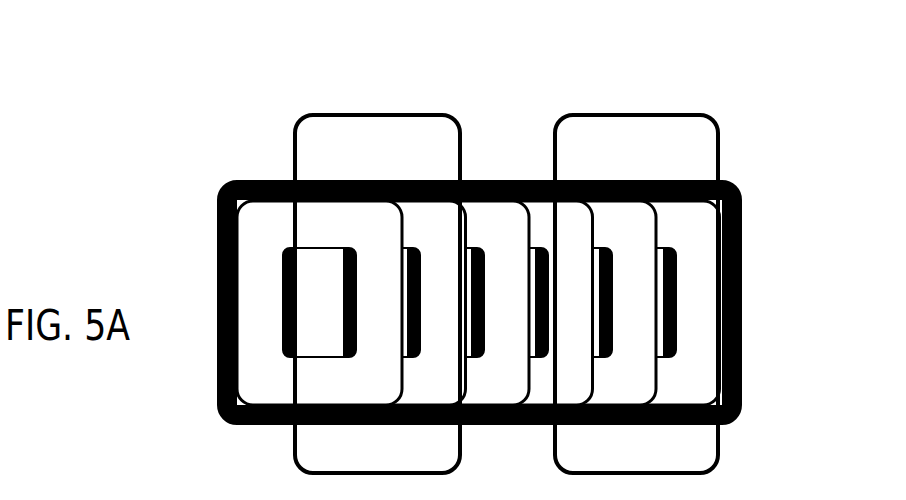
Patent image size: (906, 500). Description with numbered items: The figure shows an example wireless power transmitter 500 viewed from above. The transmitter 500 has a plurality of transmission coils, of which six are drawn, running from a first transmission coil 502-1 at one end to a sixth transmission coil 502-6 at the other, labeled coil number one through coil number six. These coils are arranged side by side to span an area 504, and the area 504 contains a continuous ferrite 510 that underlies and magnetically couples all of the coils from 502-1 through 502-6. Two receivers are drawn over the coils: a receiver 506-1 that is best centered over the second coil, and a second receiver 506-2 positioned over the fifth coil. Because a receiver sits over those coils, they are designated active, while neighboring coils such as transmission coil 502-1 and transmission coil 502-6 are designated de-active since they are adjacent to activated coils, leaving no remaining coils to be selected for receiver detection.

The wireless power transmitter 500 is at (220, 83).
The transmission coil 502-1 is at (247, 222).
The transmission coil 502-6 is at (703, 342).
The area 504 is at (740, 285).
The receiver 506-1 is at (347, 100).
The second receiver 506-2 is at (642, 100).
The continuous ferrite 510 is at (537, 297).